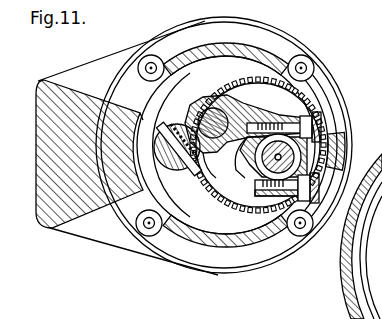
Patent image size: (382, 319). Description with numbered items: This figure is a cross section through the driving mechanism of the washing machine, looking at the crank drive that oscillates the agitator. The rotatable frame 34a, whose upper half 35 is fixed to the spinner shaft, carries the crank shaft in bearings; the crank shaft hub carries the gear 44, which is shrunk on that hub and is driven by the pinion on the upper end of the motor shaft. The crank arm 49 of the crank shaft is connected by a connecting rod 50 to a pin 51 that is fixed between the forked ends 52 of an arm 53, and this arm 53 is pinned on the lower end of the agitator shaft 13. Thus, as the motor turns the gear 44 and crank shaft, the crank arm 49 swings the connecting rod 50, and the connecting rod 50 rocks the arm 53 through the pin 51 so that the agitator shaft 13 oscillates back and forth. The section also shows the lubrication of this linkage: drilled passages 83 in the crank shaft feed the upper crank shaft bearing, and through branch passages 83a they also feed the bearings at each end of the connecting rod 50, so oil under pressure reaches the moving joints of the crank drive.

The agitator shaft 13 is at (170, 168).
The rotatable frame 34a is at (100, 243).
The upper half of the rotatable frame 35 is at (252, 243).
The gear 44 is at (211, 200).
The crank arm 49 is at (315, 139).
The connecting rod 50 is at (204, 97).
The pin 51 is at (208, 112).
The forked ends 52 is at (178, 144).
The arm 53 is at (140, 113).
The drilled passages 83 is at (262, 177).
The branch passages 83a is at (242, 128).